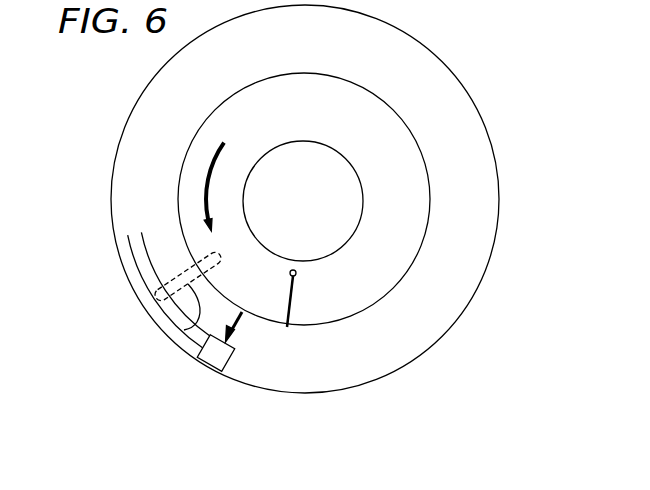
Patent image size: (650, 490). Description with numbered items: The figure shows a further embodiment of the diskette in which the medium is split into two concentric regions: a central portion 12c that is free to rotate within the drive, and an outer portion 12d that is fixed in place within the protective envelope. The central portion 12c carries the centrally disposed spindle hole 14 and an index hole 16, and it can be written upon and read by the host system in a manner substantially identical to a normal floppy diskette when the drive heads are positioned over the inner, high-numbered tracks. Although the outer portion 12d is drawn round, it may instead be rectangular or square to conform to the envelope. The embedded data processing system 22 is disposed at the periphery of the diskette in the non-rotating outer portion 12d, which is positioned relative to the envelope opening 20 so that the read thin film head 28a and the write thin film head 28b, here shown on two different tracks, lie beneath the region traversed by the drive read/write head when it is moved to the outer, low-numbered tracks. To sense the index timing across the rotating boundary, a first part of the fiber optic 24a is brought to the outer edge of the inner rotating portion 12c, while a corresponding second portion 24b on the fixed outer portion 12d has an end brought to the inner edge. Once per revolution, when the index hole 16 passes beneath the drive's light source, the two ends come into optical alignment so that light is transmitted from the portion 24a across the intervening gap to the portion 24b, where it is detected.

The central portion 12c is at (430, 213).
The outer portion 12d is at (493, 245).
The spindle hole 14 is at (362, 190).
The index hole 16 is at (293, 270).
The opening 20 is at (173, 337).
The data processing system 22 is at (237, 367).
The first part of the fiber optic 24a is at (291, 302).
The second portion of the fiber optic 24b is at (232, 312).
The read thin film head 28a is at (137, 268).
The write thin film head 28b is at (150, 276).